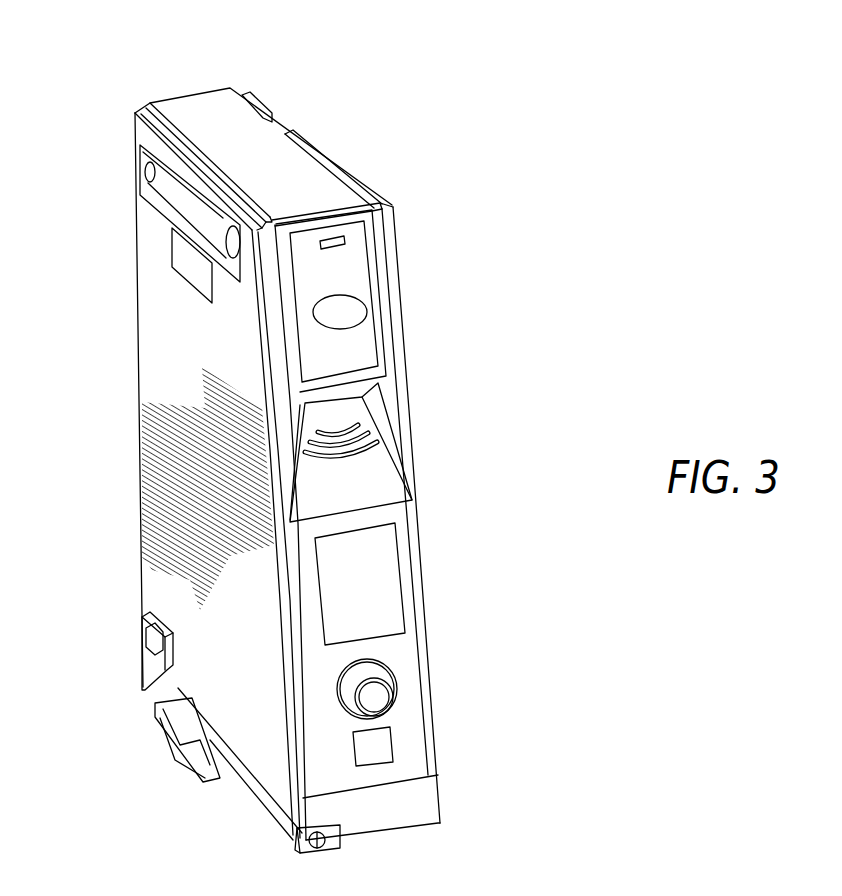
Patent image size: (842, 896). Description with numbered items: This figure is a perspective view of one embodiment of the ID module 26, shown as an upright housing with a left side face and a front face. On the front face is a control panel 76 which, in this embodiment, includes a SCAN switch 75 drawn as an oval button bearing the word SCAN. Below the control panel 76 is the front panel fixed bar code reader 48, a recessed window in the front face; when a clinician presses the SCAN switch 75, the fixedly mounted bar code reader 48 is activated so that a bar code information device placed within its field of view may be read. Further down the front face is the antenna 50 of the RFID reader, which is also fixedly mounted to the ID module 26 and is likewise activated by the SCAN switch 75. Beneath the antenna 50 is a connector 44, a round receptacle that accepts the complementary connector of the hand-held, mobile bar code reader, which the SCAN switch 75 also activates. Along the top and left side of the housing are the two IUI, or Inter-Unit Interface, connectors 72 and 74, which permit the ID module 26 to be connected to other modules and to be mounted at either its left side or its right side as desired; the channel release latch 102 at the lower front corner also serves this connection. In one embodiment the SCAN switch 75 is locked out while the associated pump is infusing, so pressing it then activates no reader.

The ID module 26 is at (175, 66).
The IUI connector 74 is at (340, 168).
The IUI connector 72 is at (165, 186).
The control panel 76 is at (363, 260).
The SCAN switch 75 is at (367, 312).
The front panel fixed bar code reader 48 is at (383, 398).
The antenna of the RFID reader 50 is at (388, 567).
The connector 44 is at (390, 670).
The channel release latch 102 is at (315, 852).